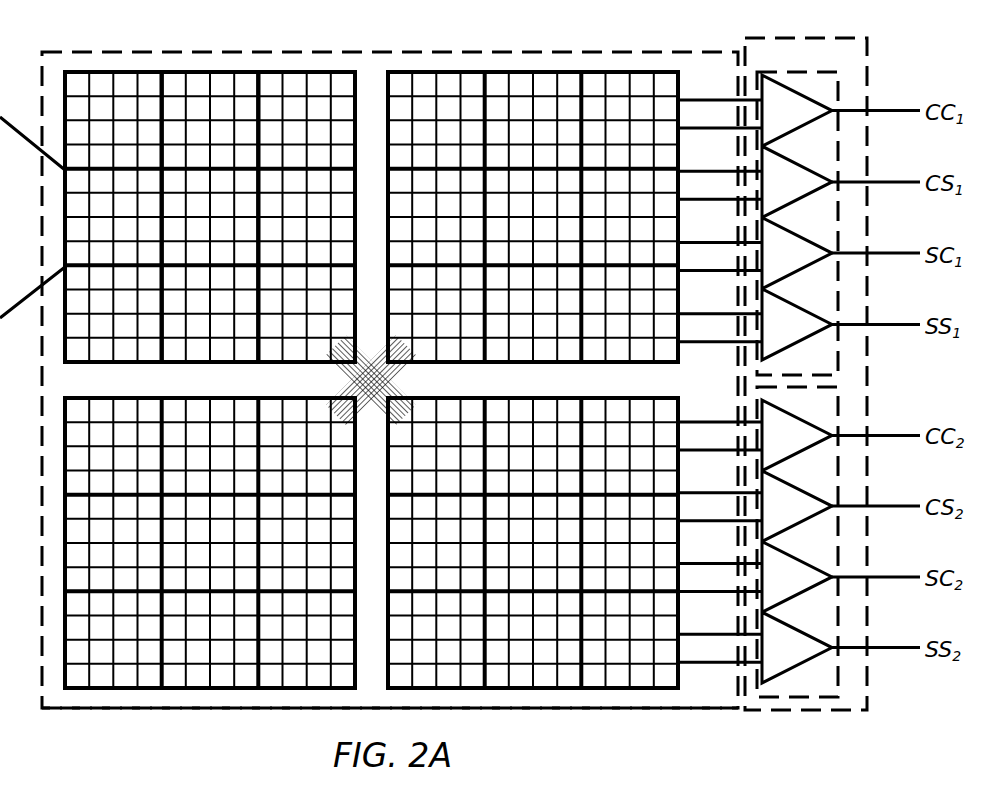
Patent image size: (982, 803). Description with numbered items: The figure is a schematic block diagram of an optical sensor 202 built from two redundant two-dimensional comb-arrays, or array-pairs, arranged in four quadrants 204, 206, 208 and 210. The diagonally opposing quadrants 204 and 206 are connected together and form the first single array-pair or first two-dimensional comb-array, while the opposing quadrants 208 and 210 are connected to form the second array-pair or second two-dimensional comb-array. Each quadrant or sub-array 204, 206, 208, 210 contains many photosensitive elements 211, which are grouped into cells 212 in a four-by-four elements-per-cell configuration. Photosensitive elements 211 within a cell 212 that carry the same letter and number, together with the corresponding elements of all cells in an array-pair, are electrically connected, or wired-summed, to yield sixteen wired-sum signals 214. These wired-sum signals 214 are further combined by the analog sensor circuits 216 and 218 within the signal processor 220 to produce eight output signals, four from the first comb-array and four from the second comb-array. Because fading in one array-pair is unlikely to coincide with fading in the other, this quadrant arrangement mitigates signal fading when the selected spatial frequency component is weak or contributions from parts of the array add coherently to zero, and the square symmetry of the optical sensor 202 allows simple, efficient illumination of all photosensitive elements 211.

The optical sensor 202 is at (390, 380).
The quadrant 204 is at (210, 217).
The quadrant 206 is at (533, 543).
The quadrant 208 is at (210, 543).
The quadrant 210 is at (533, 217).
The photosensitive element 211 is at (172, 72).
The cell 212 is at (352, 72).
The wired-sum signal 214 is at (714, 700).
The analog sensor circuit 216 is at (798, 542).
The analog sensor circuit 218 is at (797, 223).
The signal processor 220 is at (806, 374).